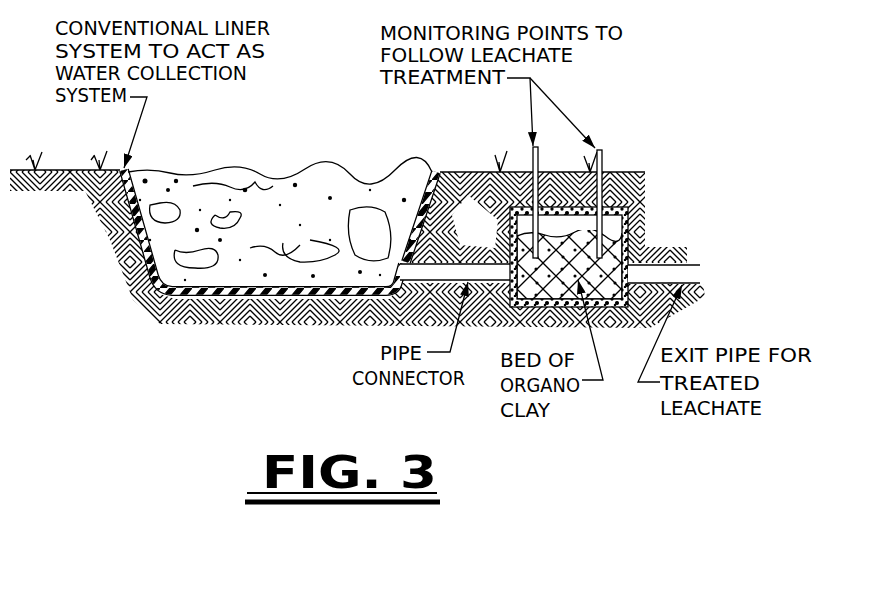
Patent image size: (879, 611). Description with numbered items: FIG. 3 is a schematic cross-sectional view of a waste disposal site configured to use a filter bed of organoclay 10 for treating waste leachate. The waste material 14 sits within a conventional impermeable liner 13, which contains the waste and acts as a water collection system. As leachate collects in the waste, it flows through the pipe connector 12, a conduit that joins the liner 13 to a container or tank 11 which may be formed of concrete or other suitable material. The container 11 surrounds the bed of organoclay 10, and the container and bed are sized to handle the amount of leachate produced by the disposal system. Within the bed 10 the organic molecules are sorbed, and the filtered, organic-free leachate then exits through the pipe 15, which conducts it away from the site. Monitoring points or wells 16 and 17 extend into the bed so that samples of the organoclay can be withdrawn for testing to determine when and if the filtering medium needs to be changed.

The bed of organoclay 10 is at (598, 298).
The container or tank 11 is at (630, 226).
The pipe connector 12 is at (430, 290).
The conventional impermeable liner 13 is at (440, 169).
The waste material 14 is at (280, 172).
The exit pipe 15 is at (690, 277).
The monitoring point or well 16 is at (538, 162).
The monitoring point or well 17 is at (603, 156).